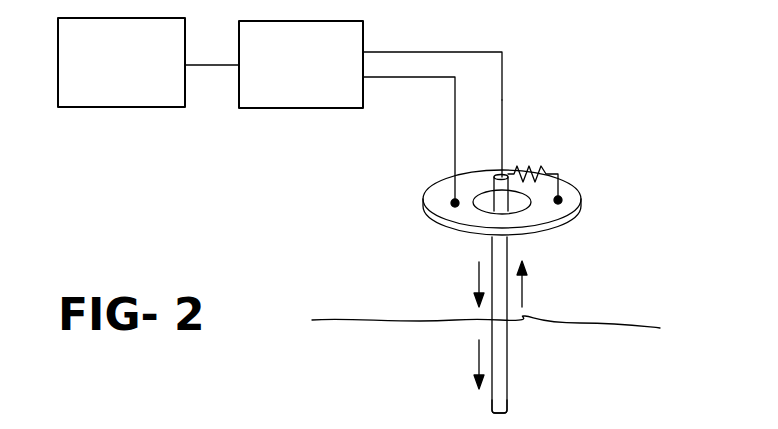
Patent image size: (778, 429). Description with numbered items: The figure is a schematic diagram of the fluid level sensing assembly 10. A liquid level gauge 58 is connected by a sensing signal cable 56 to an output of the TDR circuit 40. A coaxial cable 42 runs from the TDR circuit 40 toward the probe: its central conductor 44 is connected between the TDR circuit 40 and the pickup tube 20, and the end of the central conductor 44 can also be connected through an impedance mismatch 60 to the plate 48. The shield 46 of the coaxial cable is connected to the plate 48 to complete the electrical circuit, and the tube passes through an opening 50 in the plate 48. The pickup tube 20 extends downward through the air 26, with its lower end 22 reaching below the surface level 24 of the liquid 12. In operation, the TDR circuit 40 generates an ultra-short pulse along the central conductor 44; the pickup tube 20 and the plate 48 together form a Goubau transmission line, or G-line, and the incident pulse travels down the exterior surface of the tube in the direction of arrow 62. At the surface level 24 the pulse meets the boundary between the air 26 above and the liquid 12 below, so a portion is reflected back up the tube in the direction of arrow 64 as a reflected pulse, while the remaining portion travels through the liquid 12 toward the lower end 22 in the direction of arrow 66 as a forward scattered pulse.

The fluid level sensing assembly 10 is at (620, 90).
The liquid 12 is at (602, 367).
The pickup tube 20 is at (492, 253).
The lower end 22 is at (490, 413).
The surface level 24 is at (340, 320).
The air 26 is at (662, 290).
The TDR circuit 40 is at (315, 108).
The coaxial cable 42 is at (430, 47).
The central conductor 44 is at (502, 102).
The shield 46 is at (455, 117).
The plate 48 is at (432, 197).
The aperture in plate 50 is at (483, 200).
The sensing signal cable 56 is at (210, 65).
The liquid level gauge 58 is at (113, 107).
The impedance mismatch 60 is at (538, 167).
The arrow 62 is at (479, 280).
The arrow 64 is at (522, 290).
The arrow 66 is at (479, 357).